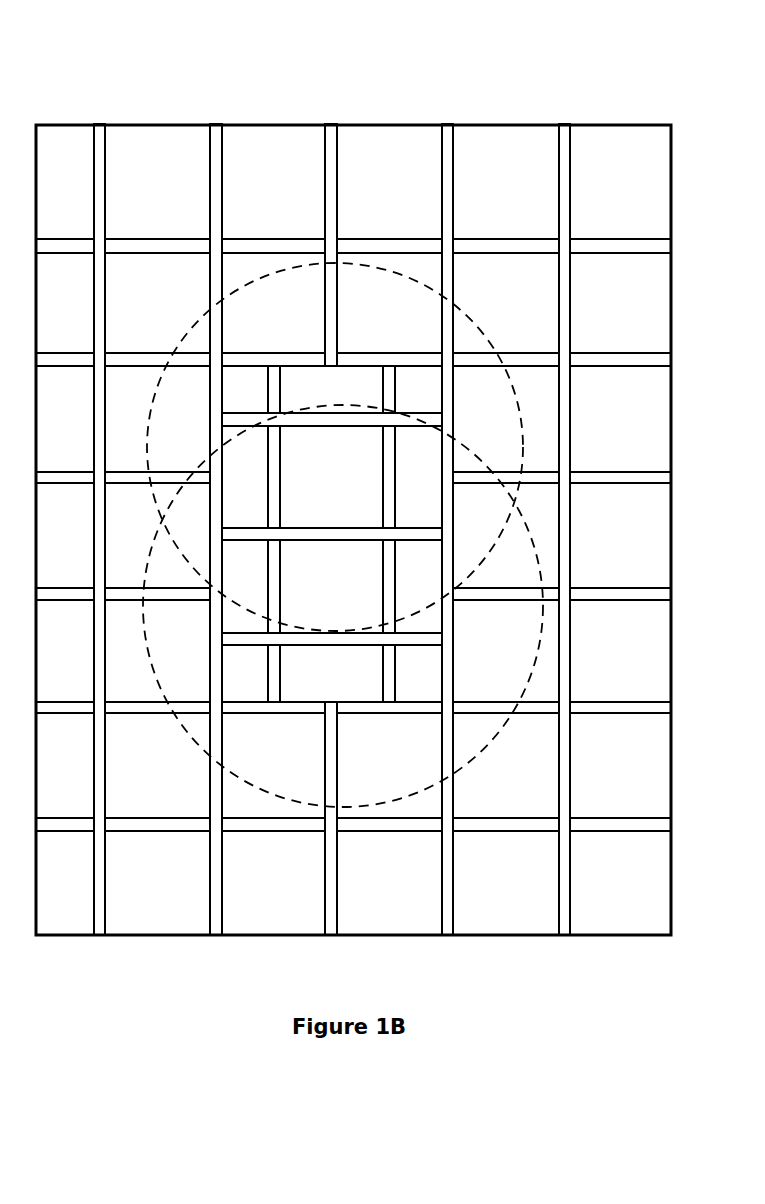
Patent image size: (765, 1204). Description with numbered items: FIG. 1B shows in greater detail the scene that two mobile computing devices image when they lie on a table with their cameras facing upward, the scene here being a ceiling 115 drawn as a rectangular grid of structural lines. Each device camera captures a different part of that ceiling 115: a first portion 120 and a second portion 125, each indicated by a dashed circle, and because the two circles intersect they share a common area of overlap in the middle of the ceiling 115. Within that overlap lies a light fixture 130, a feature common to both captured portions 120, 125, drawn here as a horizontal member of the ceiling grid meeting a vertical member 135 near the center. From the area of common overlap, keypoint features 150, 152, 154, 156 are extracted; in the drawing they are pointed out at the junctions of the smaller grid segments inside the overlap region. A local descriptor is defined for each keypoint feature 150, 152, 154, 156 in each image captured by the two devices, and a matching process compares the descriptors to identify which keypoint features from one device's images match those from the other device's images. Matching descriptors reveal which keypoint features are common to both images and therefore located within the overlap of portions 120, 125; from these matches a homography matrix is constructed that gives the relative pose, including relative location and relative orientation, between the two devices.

The ceiling 115 is at (124, 100).
The portion of the scene 120 is at (179, 308).
The portion of the scene 125 is at (174, 754).
The light fixture 130 is at (308, 366).
The vertical trace line 135 is at (302, 190).
The keypoint feature 150 is at (376, 540).
The keypoint feature 152 is at (286, 536).
The keypoint feature 154 is at (370, 444).
The keypoint feature 156 is at (285, 435).